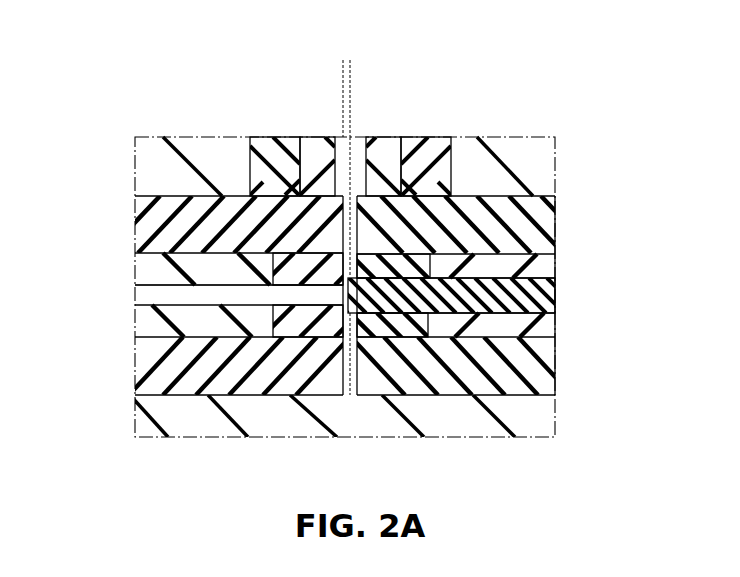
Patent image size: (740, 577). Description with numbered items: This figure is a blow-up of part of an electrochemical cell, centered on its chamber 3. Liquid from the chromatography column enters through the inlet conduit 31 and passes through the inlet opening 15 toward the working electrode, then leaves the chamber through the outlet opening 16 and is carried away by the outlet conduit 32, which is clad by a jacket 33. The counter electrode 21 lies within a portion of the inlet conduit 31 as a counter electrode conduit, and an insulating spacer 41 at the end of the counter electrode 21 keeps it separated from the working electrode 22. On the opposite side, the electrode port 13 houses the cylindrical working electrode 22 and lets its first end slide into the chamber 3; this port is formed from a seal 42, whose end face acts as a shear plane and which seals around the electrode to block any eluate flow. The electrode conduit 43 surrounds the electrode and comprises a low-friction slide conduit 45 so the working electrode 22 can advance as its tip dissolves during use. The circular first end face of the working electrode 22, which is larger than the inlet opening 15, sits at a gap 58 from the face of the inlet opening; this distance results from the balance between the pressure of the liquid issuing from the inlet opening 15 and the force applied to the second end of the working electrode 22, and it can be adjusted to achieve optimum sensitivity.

The chamber 3 is at (359, 262).
The electrode port 13 is at (355, 317).
The inlet opening 15 is at (341, 295).
The outlet opening 16 is at (352, 186).
The counter electrode 21 is at (136, 262).
The working electrode 22 is at (558, 291).
The inlet conduit 31 is at (136, 206).
The outlet conduit 32 is at (320, 136).
The jacket 33 is at (262, 136).
The insulating spacer 41 is at (291, 340).
The seal 42 is at (409, 338).
The electrode conduit 43 is at (557, 213).
The slide conduit 45 is at (557, 267).
The gap 58 is at (372, 65).